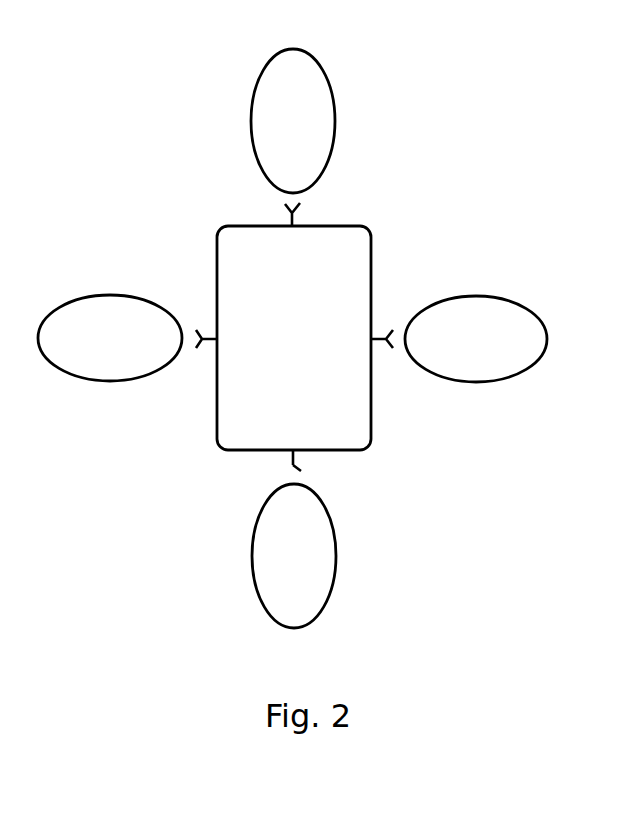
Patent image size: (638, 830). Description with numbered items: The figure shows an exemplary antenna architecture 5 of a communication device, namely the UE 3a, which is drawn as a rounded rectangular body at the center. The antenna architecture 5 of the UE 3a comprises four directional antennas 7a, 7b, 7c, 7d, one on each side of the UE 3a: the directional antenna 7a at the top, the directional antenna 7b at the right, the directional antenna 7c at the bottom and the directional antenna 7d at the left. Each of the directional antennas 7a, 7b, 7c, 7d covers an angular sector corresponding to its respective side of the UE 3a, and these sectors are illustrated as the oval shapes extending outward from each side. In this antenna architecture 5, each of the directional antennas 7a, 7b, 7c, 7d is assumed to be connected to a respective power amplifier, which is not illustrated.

The antenna architecture 5 is at (470, 158).
The UE 3a is at (356, 425).
The directional antenna 7a is at (299, 208).
The directional antenna 7b is at (378, 338).
The directional antenna 7c is at (293, 465).
The directional antenna 7d is at (213, 344).